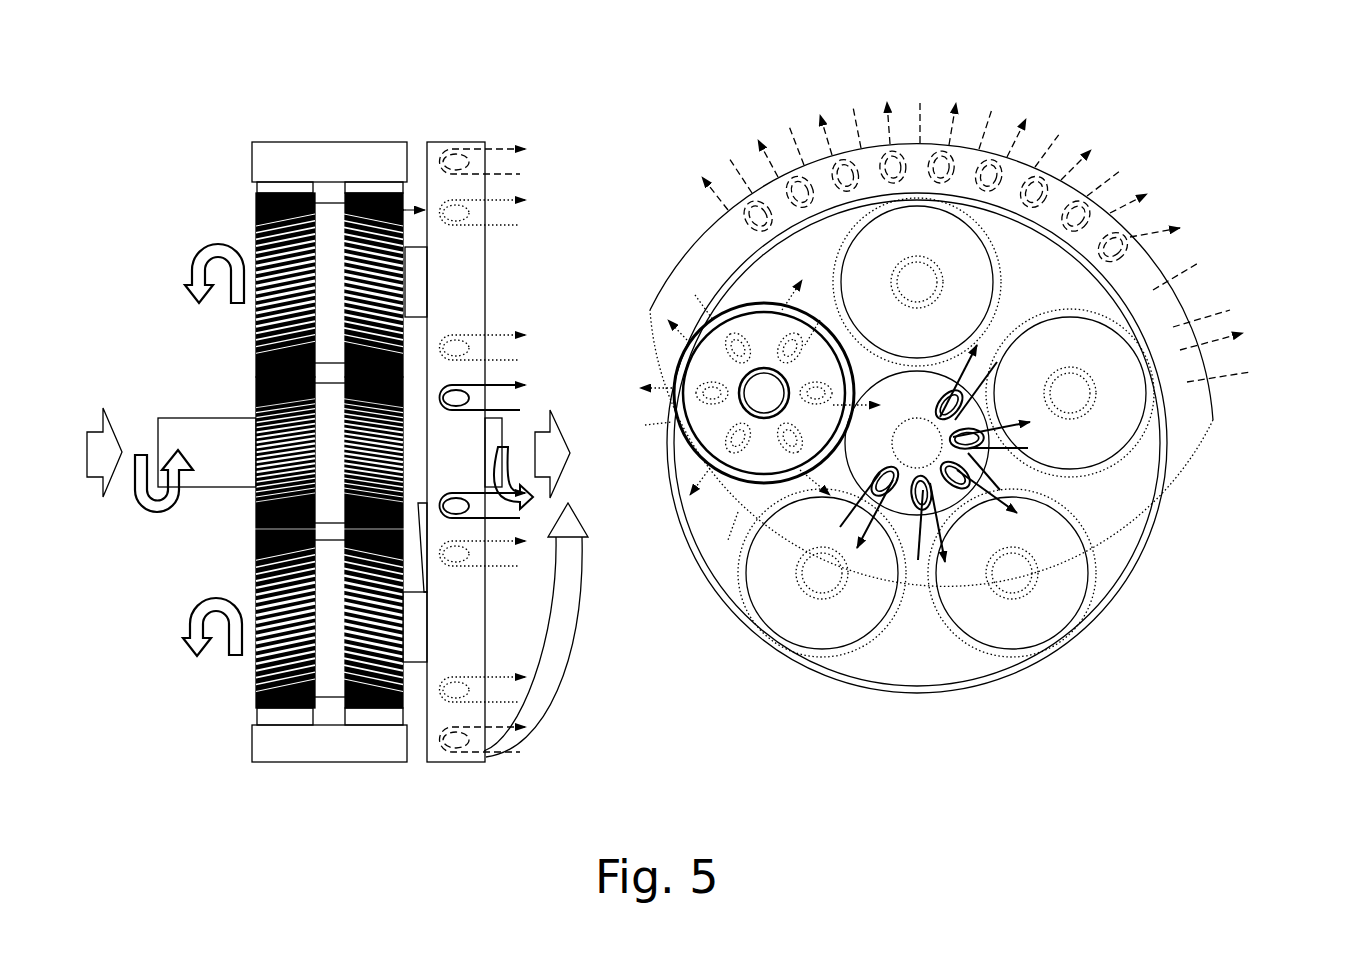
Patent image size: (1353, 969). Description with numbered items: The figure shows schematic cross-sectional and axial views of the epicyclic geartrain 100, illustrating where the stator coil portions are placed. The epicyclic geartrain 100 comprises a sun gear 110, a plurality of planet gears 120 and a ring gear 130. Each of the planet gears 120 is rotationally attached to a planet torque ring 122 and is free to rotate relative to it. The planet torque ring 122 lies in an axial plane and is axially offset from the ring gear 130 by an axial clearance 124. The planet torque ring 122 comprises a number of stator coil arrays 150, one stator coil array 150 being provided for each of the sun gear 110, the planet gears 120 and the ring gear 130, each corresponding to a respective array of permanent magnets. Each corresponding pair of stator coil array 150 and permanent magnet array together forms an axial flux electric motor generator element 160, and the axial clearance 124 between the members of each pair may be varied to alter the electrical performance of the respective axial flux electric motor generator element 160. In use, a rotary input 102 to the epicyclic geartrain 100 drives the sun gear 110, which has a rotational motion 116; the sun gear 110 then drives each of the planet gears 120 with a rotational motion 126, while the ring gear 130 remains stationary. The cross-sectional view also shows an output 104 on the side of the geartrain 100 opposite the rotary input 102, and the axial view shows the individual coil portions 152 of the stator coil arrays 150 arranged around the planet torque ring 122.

The epicyclic geartrain 100 is at (146, 126).
The rotary input 102 is at (222, 497).
The output shaft 104 is at (502, 435).
The sun gear 110 is at (373, 462).
The rotational motion 116 is at (145, 507).
The planet gears 120 is at (373, 262).
The planet torque ring 122 is at (467, 195).
The axial clearance 124 is at (408, 205).
The rotational motion 126 is at (205, 274).
The ring gear 130 is at (370, 160).
The stator coil array 150 is at (718, 382).
The permanent magnets 152 is at (706, 416).
The axial flux electric motor generator element 160 is at (415, 712).